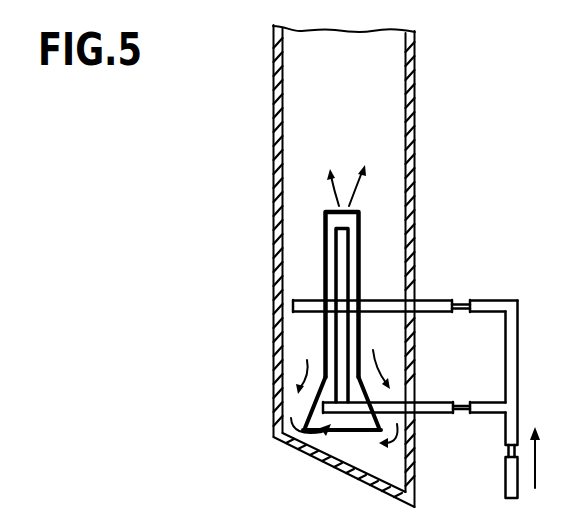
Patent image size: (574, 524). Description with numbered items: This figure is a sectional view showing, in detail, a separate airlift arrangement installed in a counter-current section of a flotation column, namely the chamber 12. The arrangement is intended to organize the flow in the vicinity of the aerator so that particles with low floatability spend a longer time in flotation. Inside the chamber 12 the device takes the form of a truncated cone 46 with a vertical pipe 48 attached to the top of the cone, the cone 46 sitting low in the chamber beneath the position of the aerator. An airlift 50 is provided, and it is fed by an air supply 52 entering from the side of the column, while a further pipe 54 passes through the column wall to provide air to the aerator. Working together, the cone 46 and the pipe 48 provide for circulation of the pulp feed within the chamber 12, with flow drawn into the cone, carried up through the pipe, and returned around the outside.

The chamber 12 is at (385, 117).
The truncated cone 46 is at (312, 402).
The vertical pipe 48 is at (325, 222).
The airlift 50 is at (342, 258).
The air supply 52 is at (453, 379).
The pipe 54 is at (396, 300).